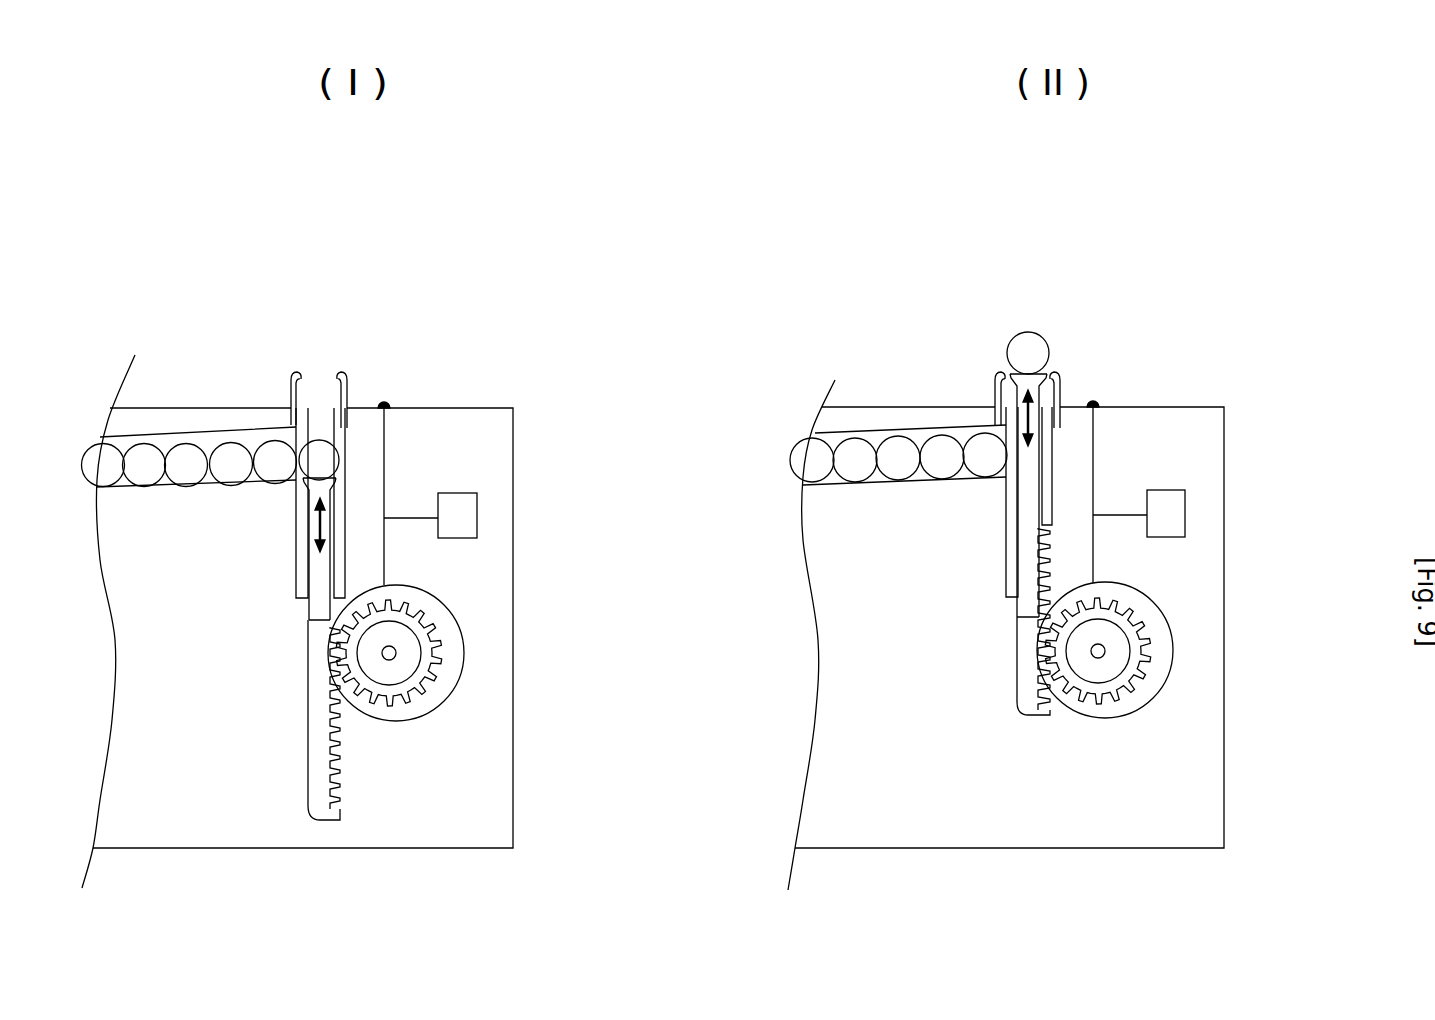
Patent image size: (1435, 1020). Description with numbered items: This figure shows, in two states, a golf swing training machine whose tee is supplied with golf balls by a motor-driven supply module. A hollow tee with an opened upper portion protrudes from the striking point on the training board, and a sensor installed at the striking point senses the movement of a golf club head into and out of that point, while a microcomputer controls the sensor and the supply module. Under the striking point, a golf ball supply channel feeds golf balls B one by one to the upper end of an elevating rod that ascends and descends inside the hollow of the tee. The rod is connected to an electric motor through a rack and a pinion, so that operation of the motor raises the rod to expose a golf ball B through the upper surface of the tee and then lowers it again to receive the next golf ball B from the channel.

The golf ball B is at (984, 436).